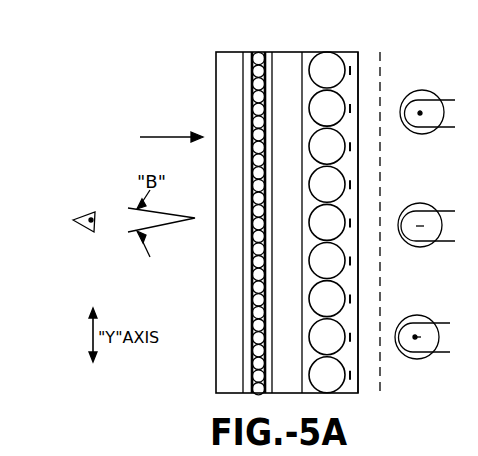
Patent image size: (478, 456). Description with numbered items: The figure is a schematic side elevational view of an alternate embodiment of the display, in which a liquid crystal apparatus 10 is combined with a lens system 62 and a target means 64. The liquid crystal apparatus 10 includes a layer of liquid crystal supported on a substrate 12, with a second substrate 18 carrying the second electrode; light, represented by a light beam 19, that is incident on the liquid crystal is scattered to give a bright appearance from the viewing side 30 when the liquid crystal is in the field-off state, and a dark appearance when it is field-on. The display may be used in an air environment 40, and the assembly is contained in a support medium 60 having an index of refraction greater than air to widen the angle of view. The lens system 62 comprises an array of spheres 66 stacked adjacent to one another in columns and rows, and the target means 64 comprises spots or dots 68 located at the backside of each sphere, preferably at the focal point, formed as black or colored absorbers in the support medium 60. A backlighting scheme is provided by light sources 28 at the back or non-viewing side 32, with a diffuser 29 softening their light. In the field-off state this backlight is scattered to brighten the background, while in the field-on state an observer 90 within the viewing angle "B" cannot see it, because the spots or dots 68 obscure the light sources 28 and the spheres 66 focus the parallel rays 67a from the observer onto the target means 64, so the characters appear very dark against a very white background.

The liquid crystal apparatus 10 is at (258, 46).
The substrate 12 is at (250, 51).
The substrate 18 is at (271, 58).
The light beam 19 is at (163, 137).
The support medium 60 is at (294, 63).
The lens system 62 is at (343, 52).
The target means 64 is at (352, 381).
The spheres 66 is at (335, 107).
The spots or dots 68 is at (351, 72).
The light sources 28 is at (421, 96).
The diffuser 29 is at (380, 365).
The observer 90 is at (81, 213).
The air environment 40 is at (161, 60).
The viewing area or side 30 is at (180, 387).
The back or non-viewing side 32 is at (422, 415).
The parallel light rays 67a is at (117, 450).